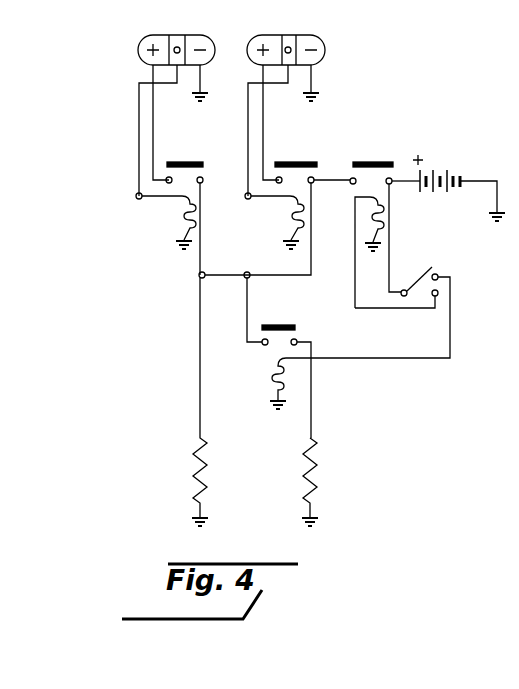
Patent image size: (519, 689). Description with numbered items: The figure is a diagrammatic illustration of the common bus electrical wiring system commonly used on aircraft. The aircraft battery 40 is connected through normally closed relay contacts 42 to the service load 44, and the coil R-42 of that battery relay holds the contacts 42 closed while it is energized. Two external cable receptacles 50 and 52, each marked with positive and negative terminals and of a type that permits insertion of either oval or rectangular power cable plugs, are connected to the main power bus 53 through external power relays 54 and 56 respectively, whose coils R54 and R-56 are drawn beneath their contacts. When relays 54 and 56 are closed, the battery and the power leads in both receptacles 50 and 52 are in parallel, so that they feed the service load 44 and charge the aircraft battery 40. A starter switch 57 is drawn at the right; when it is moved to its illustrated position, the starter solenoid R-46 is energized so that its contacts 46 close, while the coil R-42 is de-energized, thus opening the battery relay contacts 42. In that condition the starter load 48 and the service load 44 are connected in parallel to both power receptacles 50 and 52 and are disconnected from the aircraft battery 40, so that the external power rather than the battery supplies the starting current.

The external cable receptacle 52 is at (170, 35).
The external cable receptacle 50 is at (325, 50).
The external power relay 56 is at (196, 154).
The relay coil R-56 is at (166, 221).
The external power relay 54 is at (303, 154).
The relay coil R54 is at (273, 221).
The main power bus 53 is at (312, 232).
The battery relay contacts 42 is at (370, 162).
The coil R-42 is at (392, 252).
The aircraft battery 40 is at (491, 194).
The starter switch 57 is at (432, 267).
The starter solenoid contacts 46 is at (285, 325).
The starter solenoid R-46 is at (258, 383).
The service load 44 is at (193, 493).
The starter load 48 is at (318, 481).